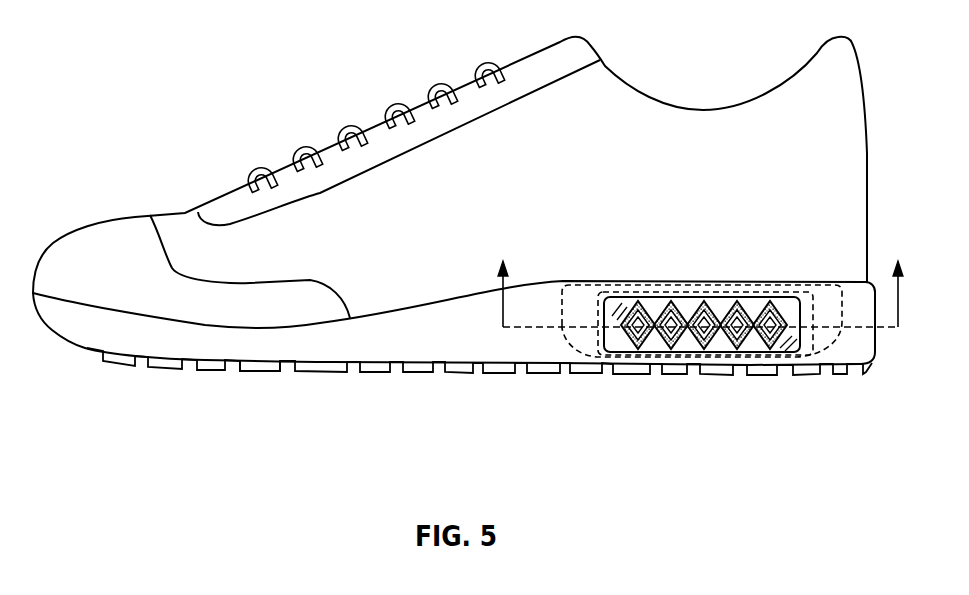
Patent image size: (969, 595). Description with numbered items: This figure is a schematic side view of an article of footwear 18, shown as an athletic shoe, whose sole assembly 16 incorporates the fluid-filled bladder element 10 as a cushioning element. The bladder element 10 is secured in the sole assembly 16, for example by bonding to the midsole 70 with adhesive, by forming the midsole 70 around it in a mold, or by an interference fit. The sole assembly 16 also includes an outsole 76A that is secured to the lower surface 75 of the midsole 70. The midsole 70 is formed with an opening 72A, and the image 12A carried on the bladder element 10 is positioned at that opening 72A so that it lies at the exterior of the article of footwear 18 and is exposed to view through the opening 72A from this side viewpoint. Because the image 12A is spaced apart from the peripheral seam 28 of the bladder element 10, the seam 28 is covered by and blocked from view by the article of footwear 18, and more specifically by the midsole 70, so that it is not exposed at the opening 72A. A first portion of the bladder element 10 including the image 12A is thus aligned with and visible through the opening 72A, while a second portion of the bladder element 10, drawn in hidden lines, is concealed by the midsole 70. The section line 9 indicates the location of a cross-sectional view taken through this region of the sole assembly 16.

The article of footwear 18 is at (169, 102).
The sole assembly 16 is at (877, 371).
The midsole 70 is at (483, 337).
The lower surface 75 is at (210, 362).
The outsole 76A is at (262, 368).
The bladder element 10 is at (583, 370).
The peripheral seam 28 is at (860, 368).
The opening 72A is at (787, 340).
The image 12A is at (638, 330).
The section line 9- 9 is at (701, 278).